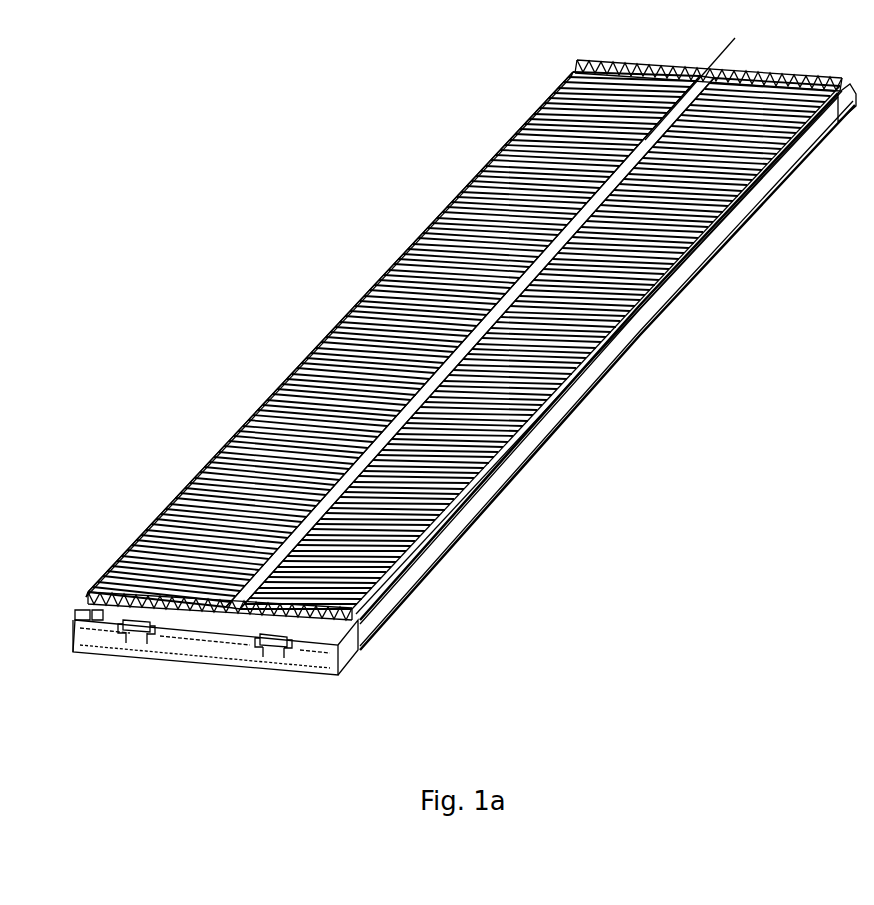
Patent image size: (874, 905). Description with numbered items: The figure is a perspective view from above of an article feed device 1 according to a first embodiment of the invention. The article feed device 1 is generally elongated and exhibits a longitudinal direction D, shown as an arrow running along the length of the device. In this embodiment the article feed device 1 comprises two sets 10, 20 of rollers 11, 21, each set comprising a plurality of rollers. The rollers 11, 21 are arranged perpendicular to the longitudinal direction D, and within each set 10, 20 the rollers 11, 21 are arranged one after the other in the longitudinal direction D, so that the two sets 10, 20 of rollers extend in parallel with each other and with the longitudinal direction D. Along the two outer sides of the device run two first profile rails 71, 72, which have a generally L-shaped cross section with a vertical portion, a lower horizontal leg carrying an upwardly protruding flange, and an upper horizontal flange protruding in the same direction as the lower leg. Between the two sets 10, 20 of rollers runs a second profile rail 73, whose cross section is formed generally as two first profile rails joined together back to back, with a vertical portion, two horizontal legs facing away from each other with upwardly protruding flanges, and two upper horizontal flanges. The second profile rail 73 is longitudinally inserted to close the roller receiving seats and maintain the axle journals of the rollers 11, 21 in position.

The article feed device 1 is at (279, 218).
The first set of rollers 10 is at (461, 212).
The rollers of the first set 11 is at (373, 297).
The second set of rollers 20 is at (527, 377).
The rollers of the second set 21 is at (682, 251).
The first profile rail 71 is at (178, 497).
The first profile rail 72 is at (477, 500).
The second profile rail 73 is at (298, 522).
The longitudinal direction D is at (735, 38).